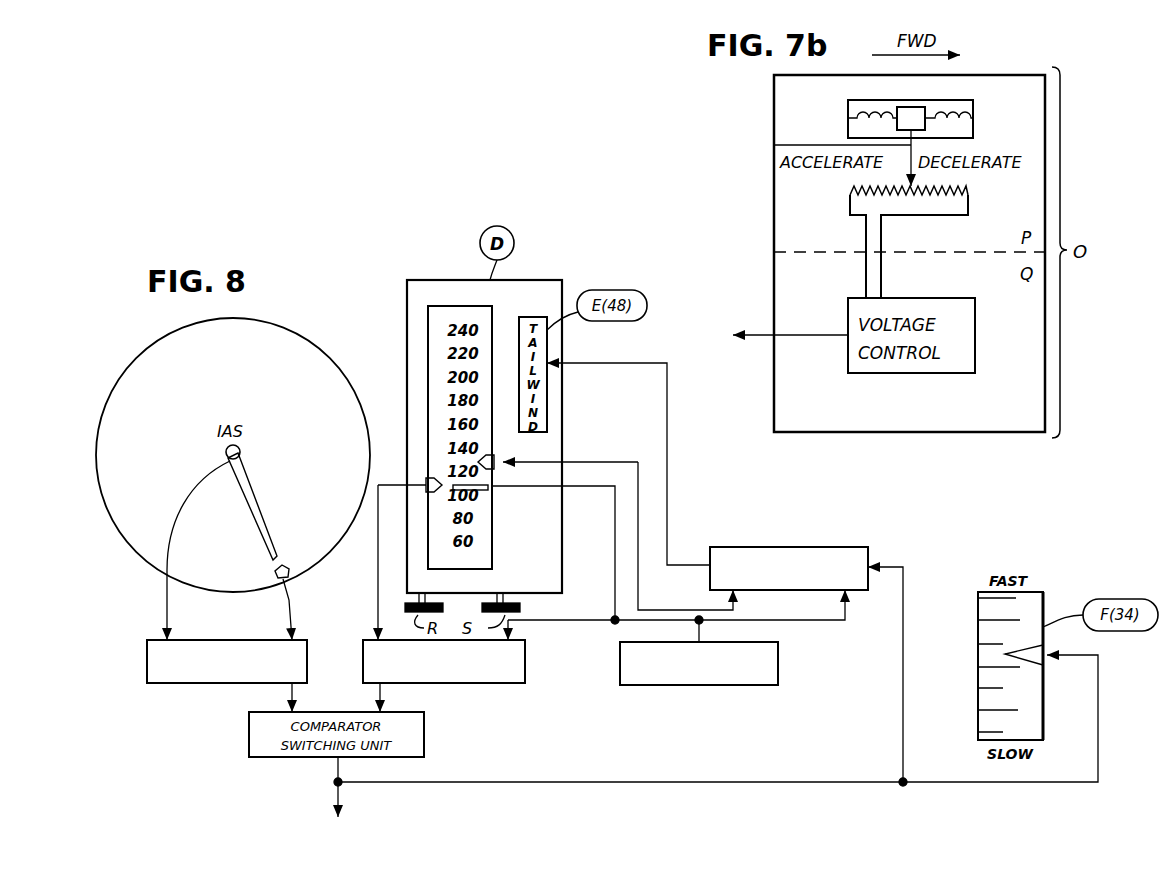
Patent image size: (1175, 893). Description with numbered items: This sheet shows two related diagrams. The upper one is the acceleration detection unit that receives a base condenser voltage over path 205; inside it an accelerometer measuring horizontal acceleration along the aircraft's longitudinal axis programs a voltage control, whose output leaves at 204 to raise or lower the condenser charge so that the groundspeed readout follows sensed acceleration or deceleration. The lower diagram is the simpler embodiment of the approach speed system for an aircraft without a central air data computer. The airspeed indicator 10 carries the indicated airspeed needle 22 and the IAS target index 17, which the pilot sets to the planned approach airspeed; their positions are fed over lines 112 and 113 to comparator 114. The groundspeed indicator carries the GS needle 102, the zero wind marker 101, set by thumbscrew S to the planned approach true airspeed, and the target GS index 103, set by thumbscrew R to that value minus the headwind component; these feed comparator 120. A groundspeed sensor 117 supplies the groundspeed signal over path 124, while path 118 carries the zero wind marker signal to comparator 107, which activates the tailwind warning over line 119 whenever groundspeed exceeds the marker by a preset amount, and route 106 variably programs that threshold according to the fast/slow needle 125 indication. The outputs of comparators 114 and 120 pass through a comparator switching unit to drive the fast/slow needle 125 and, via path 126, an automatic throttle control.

In FIG. 7B, the path 205 is at (774, 145).
In FIG. 7B, the voltage control output 204 is at (765, 335).
In FIG. 8, the airspeed indicator 10 is at (276, 323).
In FIG. 8, the indicated airspeed needle 22 is at (262, 505).
In FIG. 8, the IAS target index 17 is at (300, 567).
In FIG. 8, the needle position signal line 112 is at (167, 596).
In FIG. 8, the marker position signal line 113 is at (289, 600).
In FIG. 8, the comparator 114 is at (172, 683).
In FIG. 8, the comparator 120 is at (480, 684).
In FIG. 8, the path 126 is at (342, 801).
In FIG. 8, the route 106 is at (903, 740).
In FIG. 8, the zero wind marker 101 is at (494, 461).
In FIG. 8, the target GS index 103 is at (438, 478).
In FIG. 8, the GS needle 102 is at (480, 492).
In FIG. 8, the path 118 is at (650, 610).
In FIG. 8, the tailwind signal line 119 is at (688, 565).
In FIG. 8, the comparator 107 is at (860, 547).
In FIG. 8, the path 124 is at (818, 622).
In FIG. 8, the sensor 117 is at (683, 685).
In FIG. 8, the fast/slow needle 125 is at (1045, 667).